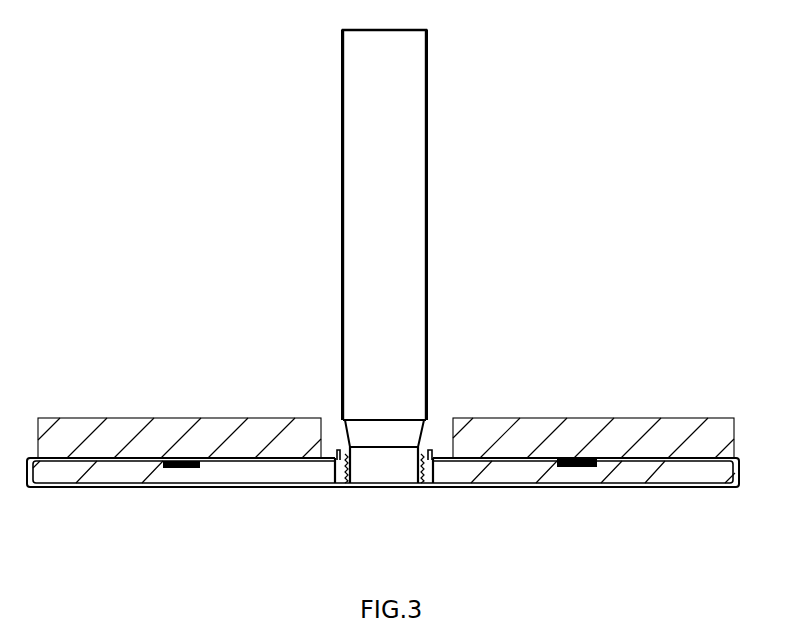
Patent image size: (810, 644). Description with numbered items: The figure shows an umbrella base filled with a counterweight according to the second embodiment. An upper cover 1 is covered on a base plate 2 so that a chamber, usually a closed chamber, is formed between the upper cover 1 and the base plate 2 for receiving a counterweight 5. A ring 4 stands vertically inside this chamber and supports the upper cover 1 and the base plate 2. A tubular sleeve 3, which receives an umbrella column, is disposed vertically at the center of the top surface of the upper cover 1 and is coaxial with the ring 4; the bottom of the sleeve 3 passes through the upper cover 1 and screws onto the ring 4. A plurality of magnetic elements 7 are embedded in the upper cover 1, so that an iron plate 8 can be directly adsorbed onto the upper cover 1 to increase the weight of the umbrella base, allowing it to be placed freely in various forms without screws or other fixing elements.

The upper cover 1 is at (640, 458).
The base plate 2 is at (645, 487).
The sleeve 3 is at (427, 235).
The ring 4 is at (437, 487).
The counterweight 5 is at (120, 473).
The magnetic elements 7 is at (577, 457).
The iron plate 8 is at (253, 443).